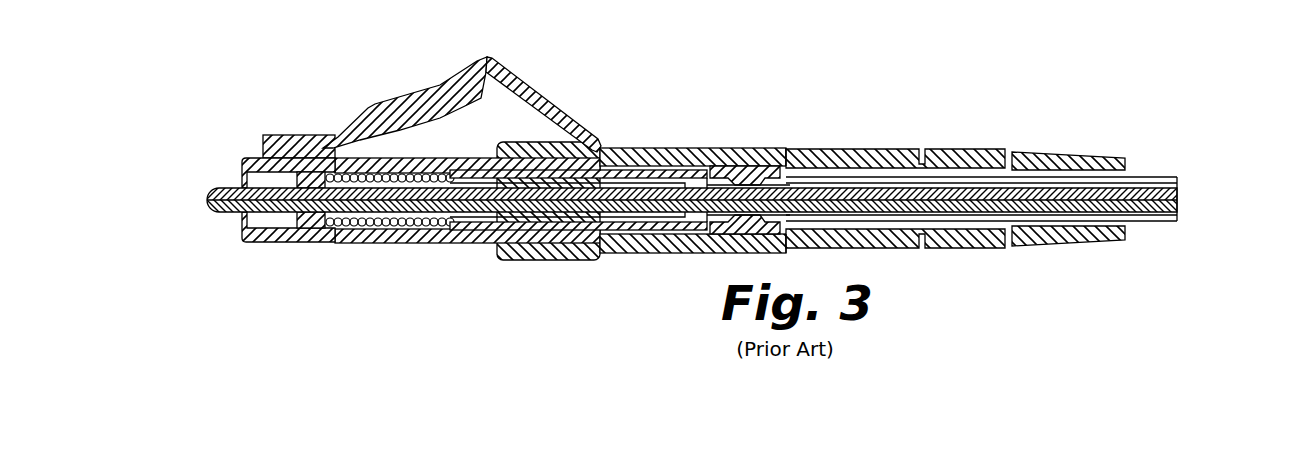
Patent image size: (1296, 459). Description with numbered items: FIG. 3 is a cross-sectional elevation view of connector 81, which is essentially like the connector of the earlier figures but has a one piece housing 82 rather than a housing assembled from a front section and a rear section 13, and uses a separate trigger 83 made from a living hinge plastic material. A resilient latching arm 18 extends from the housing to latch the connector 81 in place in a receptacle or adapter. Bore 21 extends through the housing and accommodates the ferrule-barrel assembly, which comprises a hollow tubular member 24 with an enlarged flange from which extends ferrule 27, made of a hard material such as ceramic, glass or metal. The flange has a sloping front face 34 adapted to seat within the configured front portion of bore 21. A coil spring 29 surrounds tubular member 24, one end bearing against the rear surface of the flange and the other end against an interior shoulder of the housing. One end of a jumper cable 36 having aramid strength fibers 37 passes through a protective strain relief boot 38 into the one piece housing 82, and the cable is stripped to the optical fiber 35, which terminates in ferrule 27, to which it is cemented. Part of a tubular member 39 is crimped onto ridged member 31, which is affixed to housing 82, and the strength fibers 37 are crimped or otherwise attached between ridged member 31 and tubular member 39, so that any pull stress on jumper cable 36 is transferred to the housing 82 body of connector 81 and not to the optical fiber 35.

The rear section 13 is at (562, 260).
The resilient latching arm 18 is at (423, 92).
The bore 21 is at (257, 238).
The hollow tubular member 24 is at (377, 237).
The ferrule 27 is at (215, 187).
The coil spring 29 is at (403, 226).
The ridged member 31 is at (788, 156).
The sloping front face 34 is at (303, 217).
The optical fiber 35 is at (222, 214).
The jumper cable 36 is at (1145, 216).
The aramid strength fibers 37 is at (1152, 177).
The protective strain relief boot 38 is at (968, 152).
The tubular member 39 is at (615, 248).
The connector 81 is at (757, 90).
The one piece housing 82 is at (465, 233).
The trigger 83 is at (531, 75).